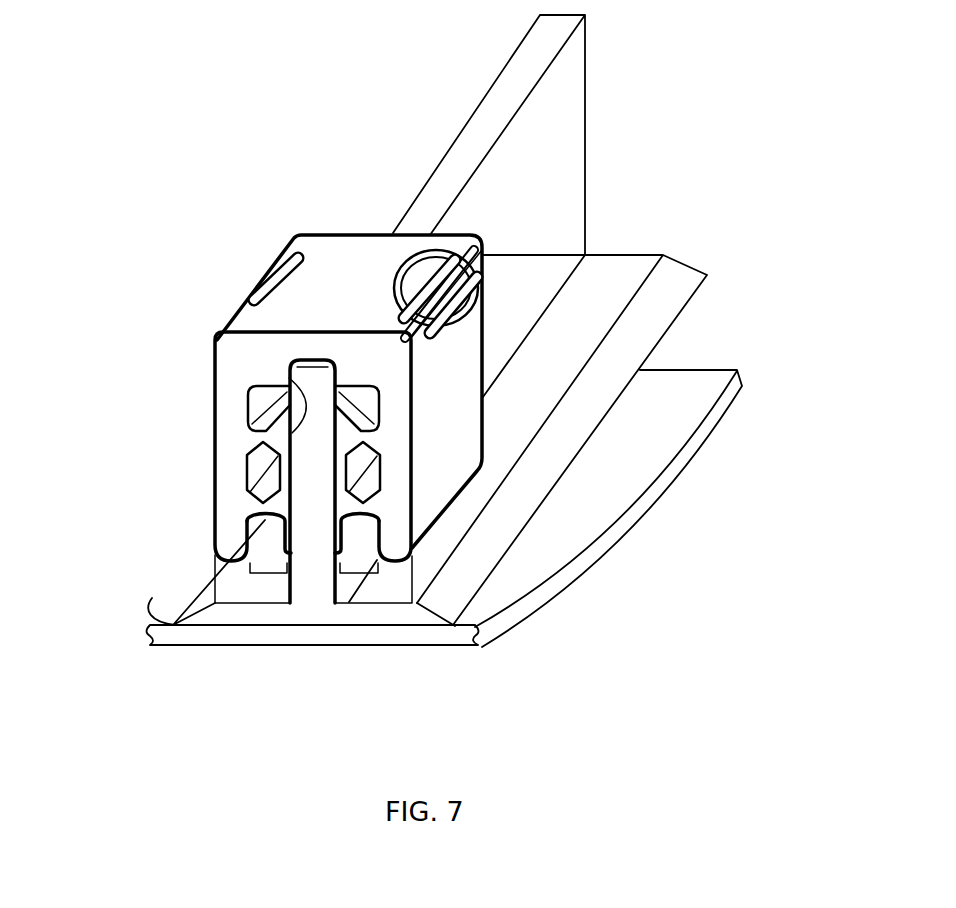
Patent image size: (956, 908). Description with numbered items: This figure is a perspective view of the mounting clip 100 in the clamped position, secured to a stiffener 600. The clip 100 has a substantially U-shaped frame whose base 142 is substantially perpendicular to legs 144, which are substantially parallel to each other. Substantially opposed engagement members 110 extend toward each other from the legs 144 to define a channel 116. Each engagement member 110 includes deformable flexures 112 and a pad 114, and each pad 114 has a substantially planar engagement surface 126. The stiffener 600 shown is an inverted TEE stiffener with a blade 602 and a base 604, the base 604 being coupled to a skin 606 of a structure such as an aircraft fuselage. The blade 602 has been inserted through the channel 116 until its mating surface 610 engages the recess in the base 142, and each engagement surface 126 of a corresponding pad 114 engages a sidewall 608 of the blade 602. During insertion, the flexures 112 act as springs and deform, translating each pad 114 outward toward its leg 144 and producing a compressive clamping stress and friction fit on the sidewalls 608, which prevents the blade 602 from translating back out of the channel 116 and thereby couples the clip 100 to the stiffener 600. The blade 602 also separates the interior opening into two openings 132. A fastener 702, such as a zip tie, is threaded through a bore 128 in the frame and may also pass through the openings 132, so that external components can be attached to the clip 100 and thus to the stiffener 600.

The clip 100 is at (295, 222).
The engagement members 110 is at (314, 495).
The deformable flexures 112 is at (263, 511).
The pad 114 is at (252, 418).
The channel 116 is at (230, 560).
The engagement surfaces 126 is at (333, 415).
The bores 128 is at (265, 282).
The openings 132 is at (272, 401).
The base 142 is at (372, 348).
The legs 144 is at (243, 541).
The stiffener 600 is at (460, 104).
The blade 602 is at (345, 617).
The base 604 is at (318, 583).
The skin 606 is at (300, 636).
The sidewall 608 is at (440, 342).
The mating surface 610 is at (305, 356).
The fastener 702 is at (458, 252).